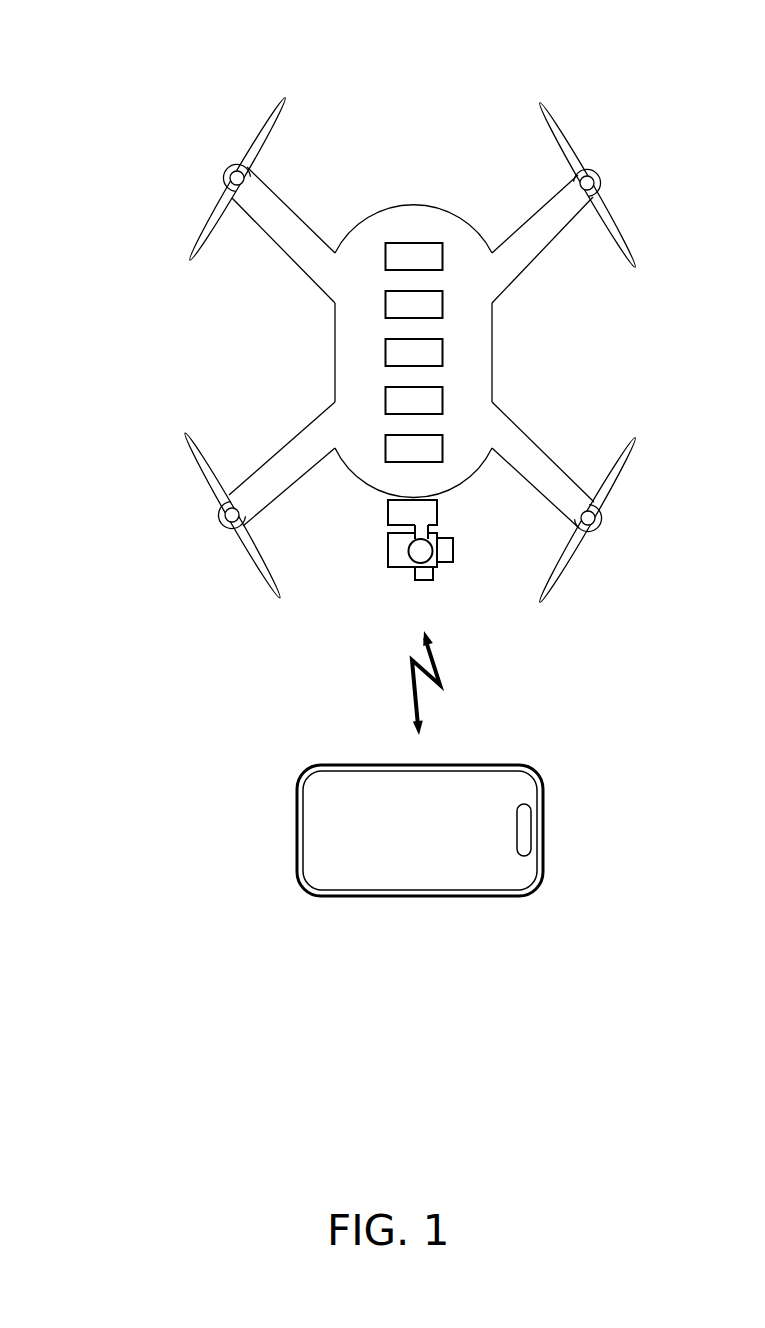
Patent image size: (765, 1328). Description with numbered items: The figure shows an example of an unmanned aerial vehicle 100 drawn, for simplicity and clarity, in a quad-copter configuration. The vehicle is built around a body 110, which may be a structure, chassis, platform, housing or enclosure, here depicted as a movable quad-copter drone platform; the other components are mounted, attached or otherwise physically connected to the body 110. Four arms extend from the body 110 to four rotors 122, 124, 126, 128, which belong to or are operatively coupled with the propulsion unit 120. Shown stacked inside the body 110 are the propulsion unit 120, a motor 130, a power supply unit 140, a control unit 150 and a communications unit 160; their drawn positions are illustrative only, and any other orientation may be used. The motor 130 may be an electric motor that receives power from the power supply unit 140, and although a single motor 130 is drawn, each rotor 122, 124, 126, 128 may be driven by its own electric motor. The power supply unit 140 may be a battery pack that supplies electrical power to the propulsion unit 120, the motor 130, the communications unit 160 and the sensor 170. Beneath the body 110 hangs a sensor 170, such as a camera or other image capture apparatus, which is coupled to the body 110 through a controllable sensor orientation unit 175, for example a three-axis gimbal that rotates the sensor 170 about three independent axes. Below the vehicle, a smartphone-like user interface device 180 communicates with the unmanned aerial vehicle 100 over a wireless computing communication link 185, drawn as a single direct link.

The unmanned aerial vehicle 100 is at (131, 44).
The body 110 is at (402, 204).
The propulsion unit 120 is at (399, 267).
The motor 130 is at (399, 315).
The power supply unit 140 is at (399, 363).
The control unit 150 is at (399, 411).
The communications unit 160 is at (399, 459).
The rotor 122 is at (285, 97).
The rotor 124 is at (541, 102).
The rotor 126 is at (636, 440).
The rotor 128 is at (185, 432).
The sensor 170 is at (388, 547).
The sensor orientation unit 175 is at (454, 549).
The user interface device 180 is at (528, 765).
The computing communication link 185 is at (407, 692).